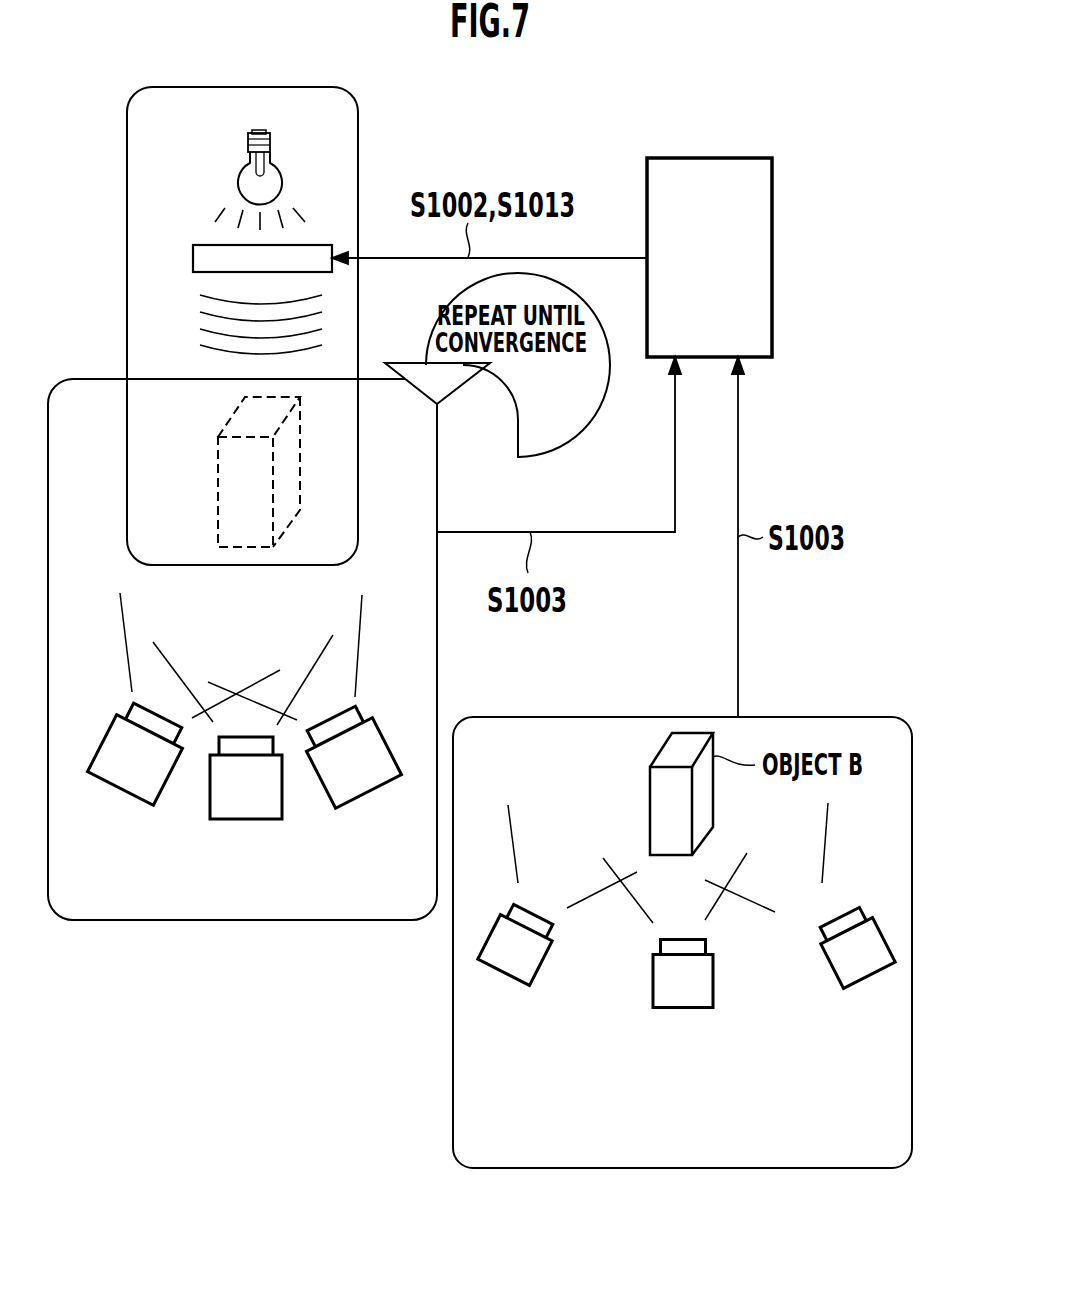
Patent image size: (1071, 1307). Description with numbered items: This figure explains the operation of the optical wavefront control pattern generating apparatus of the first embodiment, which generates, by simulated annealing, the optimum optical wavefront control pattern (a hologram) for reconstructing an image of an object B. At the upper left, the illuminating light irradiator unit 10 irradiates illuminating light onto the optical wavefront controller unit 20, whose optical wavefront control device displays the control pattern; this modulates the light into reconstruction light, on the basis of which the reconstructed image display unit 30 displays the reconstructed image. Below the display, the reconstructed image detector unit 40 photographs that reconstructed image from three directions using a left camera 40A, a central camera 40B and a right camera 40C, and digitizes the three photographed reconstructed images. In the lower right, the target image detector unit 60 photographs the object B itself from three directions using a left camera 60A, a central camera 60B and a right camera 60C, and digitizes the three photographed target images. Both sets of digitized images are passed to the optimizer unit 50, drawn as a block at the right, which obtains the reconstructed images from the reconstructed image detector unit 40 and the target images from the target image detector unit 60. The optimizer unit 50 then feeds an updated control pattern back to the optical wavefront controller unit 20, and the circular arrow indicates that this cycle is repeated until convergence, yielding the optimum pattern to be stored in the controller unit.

The illuminating light irradiator unit 10 is at (272, 155).
The optical wavefront controller unit 20 is at (313, 245).
The reconstructed image display unit 30 is at (247, 547).
The reconstructed image detector unit 40 is at (222, 824).
The left camera 40A is at (98, 775).
The central camera 40B is at (273, 819).
The right camera 40C is at (380, 788).
The optimizer unit 50 is at (772, 205).
The target image detector unit 60 is at (595, 1074).
The left camera 60A is at (505, 982).
The central camera 60B is at (680, 1008).
The right camera 60C is at (830, 962).